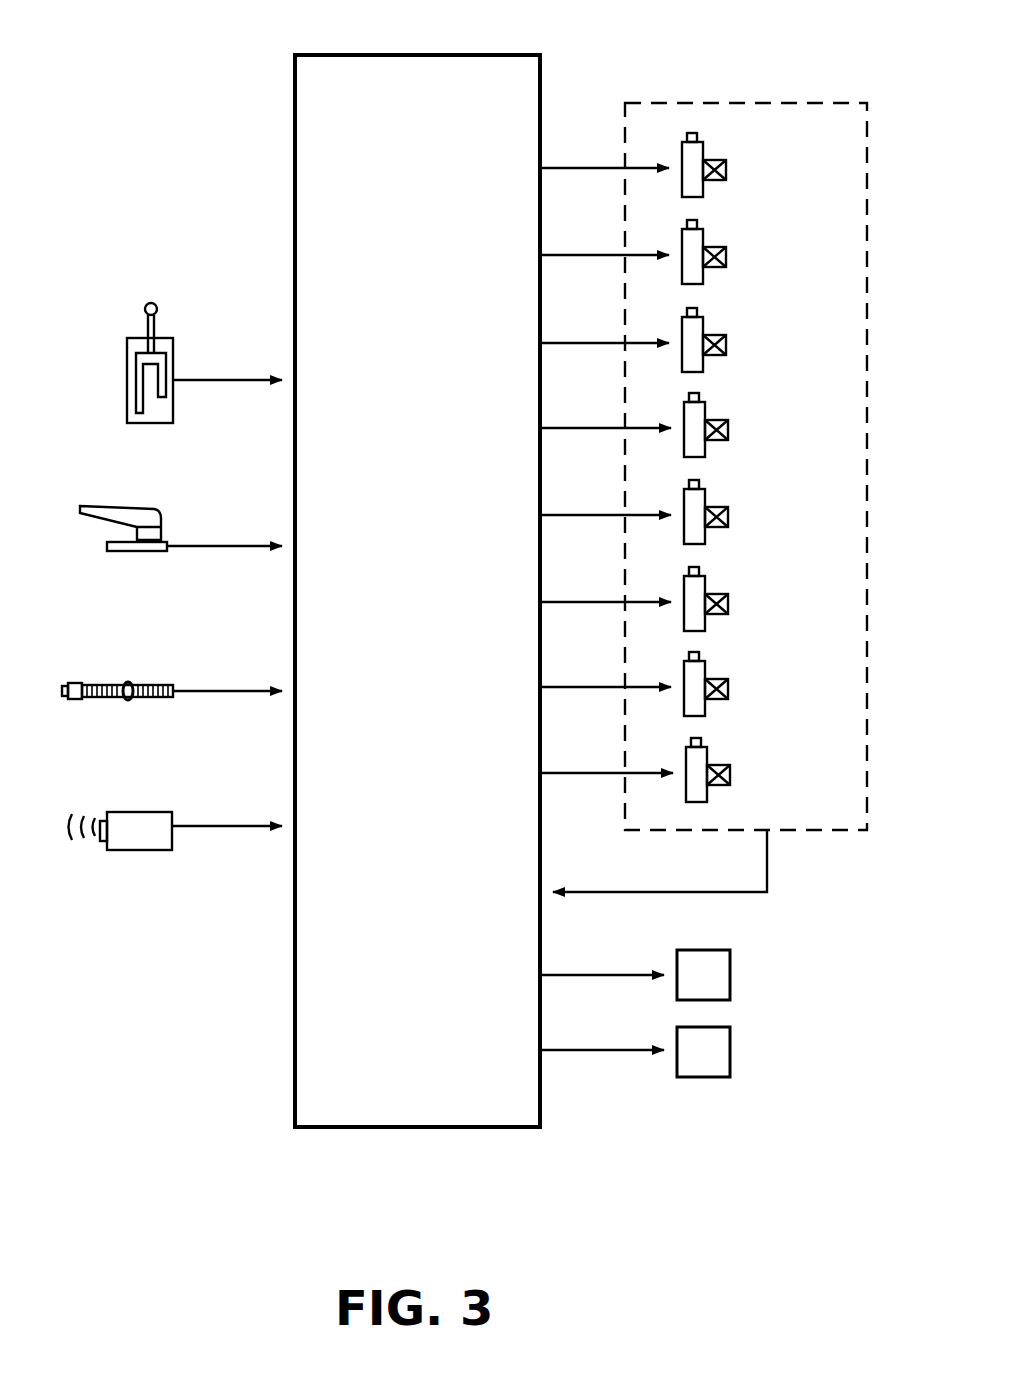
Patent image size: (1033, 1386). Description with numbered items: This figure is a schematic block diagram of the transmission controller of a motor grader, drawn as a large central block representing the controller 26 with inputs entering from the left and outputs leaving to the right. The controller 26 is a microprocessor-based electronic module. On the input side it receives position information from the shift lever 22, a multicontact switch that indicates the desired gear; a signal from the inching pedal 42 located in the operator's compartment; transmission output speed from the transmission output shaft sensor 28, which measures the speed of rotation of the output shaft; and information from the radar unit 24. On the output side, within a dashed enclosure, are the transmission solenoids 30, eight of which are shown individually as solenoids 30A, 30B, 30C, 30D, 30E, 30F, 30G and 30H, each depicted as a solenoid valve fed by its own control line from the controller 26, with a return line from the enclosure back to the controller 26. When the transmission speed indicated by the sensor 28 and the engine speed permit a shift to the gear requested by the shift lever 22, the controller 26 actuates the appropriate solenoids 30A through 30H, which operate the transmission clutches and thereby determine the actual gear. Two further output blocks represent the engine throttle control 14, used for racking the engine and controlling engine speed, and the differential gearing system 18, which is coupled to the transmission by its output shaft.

The controller 26 is at (485, 57).
The shift lever 22 is at (146, 305).
The inching pedal 42 is at (136, 508).
The transmission output shaft sensor 28 is at (105, 684).
The radar unit 24 is at (100, 820).
The transmission solenoids 30 is at (732, 98).
The transmission solenoid 30A is at (700, 158).
The transmission solenoid 30B is at (700, 245).
The transmission solenoid 30C is at (700, 333).
The transmission solenoid 30D is at (702, 418).
The transmission solenoid 30E is at (702, 505).
The transmission solenoid 30F is at (702, 592).
The transmission solenoid 30G is at (702, 677).
The transmission solenoid 30H is at (704, 763).
The engine throttle control 14 is at (718, 968).
The differential gearing system 18 is at (720, 1048).